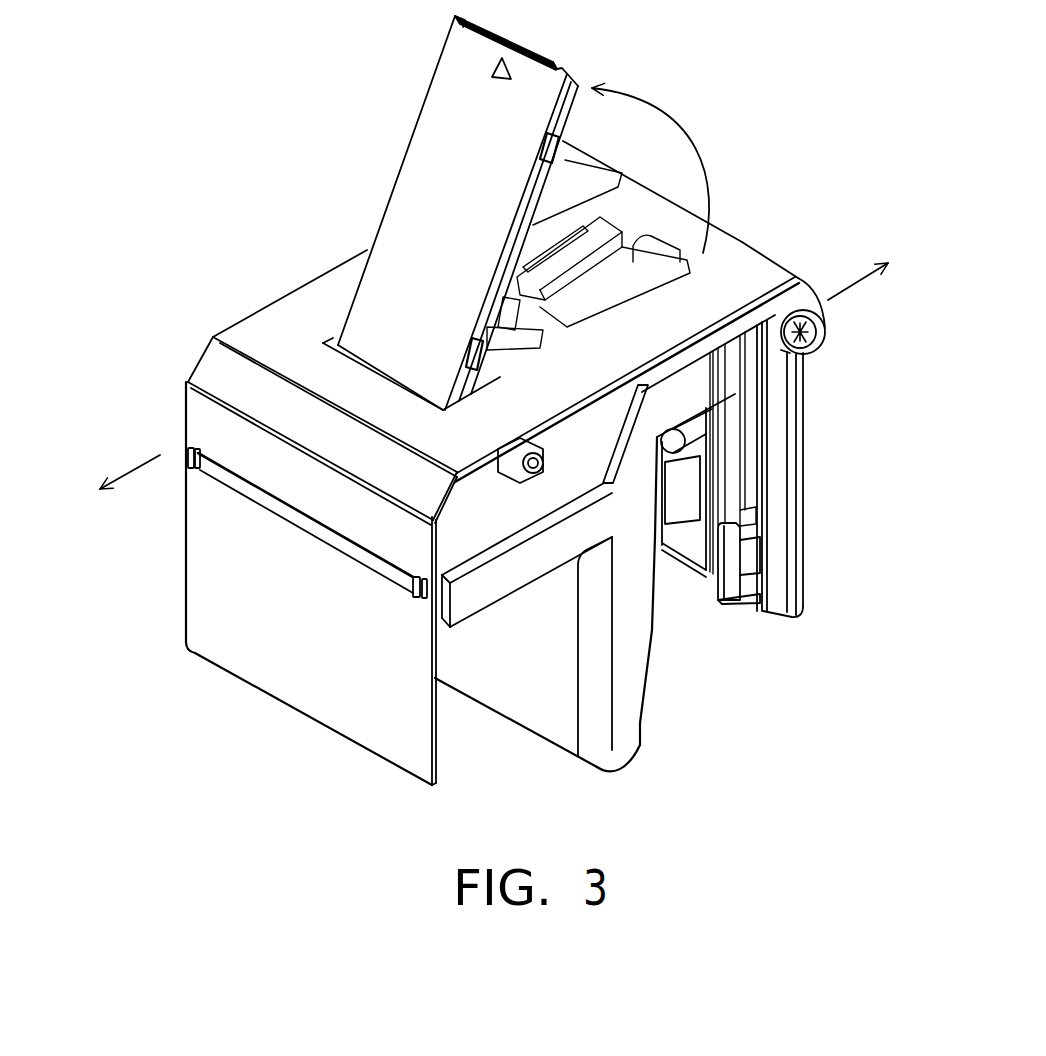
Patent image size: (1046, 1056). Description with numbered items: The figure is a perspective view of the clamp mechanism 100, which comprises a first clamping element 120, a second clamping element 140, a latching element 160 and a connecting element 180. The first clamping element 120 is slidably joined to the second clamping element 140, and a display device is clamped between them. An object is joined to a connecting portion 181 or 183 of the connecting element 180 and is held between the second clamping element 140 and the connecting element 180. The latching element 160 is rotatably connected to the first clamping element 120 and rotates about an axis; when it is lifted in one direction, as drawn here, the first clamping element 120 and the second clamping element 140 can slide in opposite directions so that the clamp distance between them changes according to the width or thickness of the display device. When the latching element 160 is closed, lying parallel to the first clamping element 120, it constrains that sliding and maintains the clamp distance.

The clamp mechanism 100 is at (103, 121).
The first clamping element 120 is at (189, 364).
The second clamping element 140 is at (652, 689).
The latching element 160 is at (462, 136).
The connecting element 180 is at (809, 429).
The connecting portion 181 is at (697, 435).
The connecting portion 183 is at (740, 585).